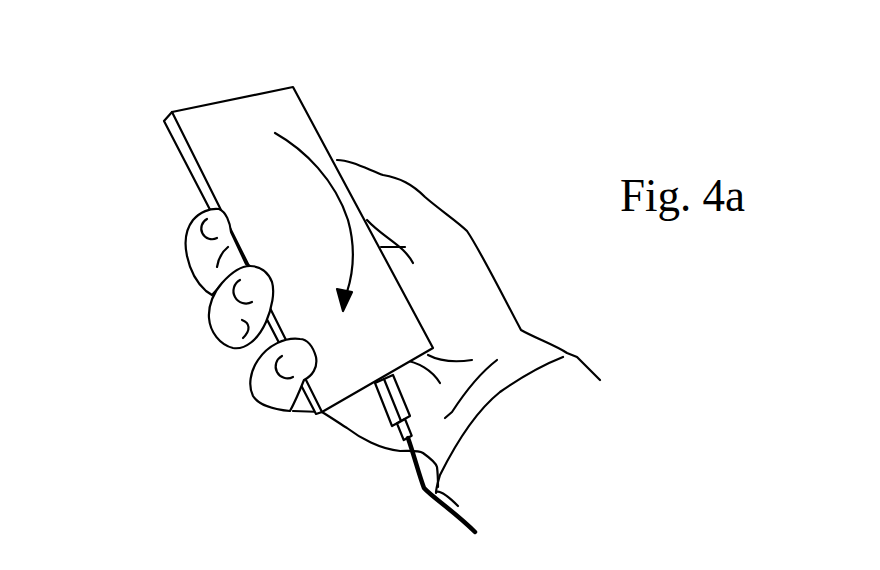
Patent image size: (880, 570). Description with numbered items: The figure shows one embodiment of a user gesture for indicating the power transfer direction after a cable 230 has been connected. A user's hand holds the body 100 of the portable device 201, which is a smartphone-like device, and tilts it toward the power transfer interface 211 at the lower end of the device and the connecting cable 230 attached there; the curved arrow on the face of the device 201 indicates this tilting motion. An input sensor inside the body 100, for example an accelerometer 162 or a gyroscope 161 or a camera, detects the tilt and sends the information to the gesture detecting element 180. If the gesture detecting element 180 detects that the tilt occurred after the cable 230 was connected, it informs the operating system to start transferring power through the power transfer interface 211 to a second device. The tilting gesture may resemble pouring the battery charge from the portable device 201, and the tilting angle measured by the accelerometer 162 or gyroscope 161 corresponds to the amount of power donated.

The body 100 is at (173, 112).
The portable device 201 is at (274, 104).
The gyroscope 161 is at (181, 157).
The accelerometer 162 is at (180, 263).
The gesture detecting element 180 is at (180, 263).
The power transfer interface 211 is at (374, 383).
The cable 230 is at (426, 458).